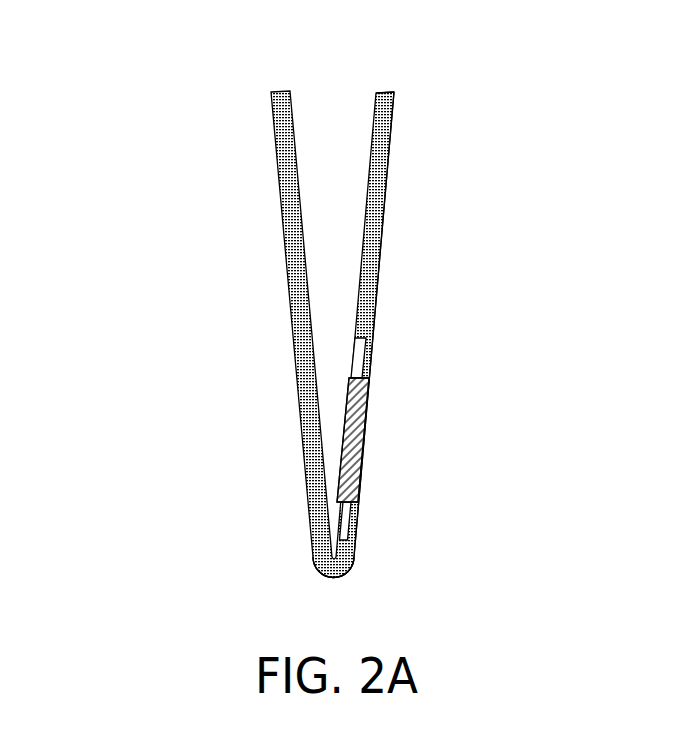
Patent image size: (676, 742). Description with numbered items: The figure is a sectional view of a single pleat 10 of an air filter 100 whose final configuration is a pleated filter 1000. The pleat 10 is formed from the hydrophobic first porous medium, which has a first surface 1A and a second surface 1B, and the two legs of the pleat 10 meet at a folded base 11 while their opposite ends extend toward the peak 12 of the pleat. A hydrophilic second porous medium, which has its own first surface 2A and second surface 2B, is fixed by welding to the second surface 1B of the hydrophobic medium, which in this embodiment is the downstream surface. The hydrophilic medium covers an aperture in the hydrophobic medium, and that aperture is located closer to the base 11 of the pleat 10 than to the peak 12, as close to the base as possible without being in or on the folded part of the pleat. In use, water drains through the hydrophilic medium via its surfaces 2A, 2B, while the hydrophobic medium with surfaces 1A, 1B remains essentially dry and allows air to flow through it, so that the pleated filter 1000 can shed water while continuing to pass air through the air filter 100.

The pleated filter 1000 is at (110, 67).
The air filter 100 is at (242, 244).
The first surface of the hydrophobic medium 1A is at (373, 137).
The second surface of the hydrophobic medium 1B is at (386, 203).
The peak of the pleat 12 is at (387, 88).
The pleat 10 is at (348, 618).
The base of the pleat 11 is at (356, 575).
The first surface of the hydrophilic medium 2A is at (347, 415).
The second surface of the hydrophilic medium 2B is at (367, 435).